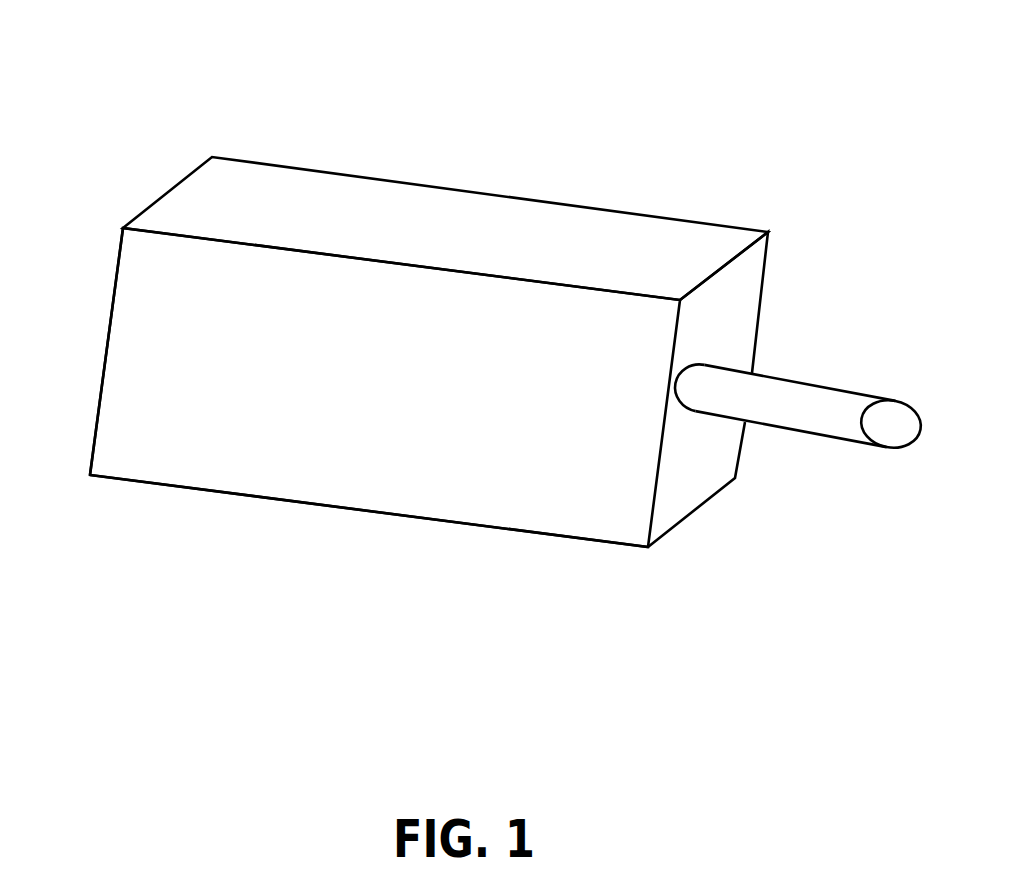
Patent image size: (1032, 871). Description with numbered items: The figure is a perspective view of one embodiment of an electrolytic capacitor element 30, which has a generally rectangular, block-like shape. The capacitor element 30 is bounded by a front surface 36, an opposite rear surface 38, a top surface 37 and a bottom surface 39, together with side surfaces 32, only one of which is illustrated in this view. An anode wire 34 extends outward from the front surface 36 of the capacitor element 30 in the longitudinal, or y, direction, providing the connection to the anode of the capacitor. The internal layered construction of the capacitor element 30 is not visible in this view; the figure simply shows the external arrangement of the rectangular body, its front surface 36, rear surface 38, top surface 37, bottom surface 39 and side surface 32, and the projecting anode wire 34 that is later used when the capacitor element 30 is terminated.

The capacitor element 30 is at (485, 353).
The side surface 32 is at (185, 452).
The anode wire 34 is at (835, 385).
The front surface 36 is at (733, 312).
The top surface 37 is at (268, 197).
The rear surface 38 is at (108, 343).
The bottom surface 39 is at (412, 518).